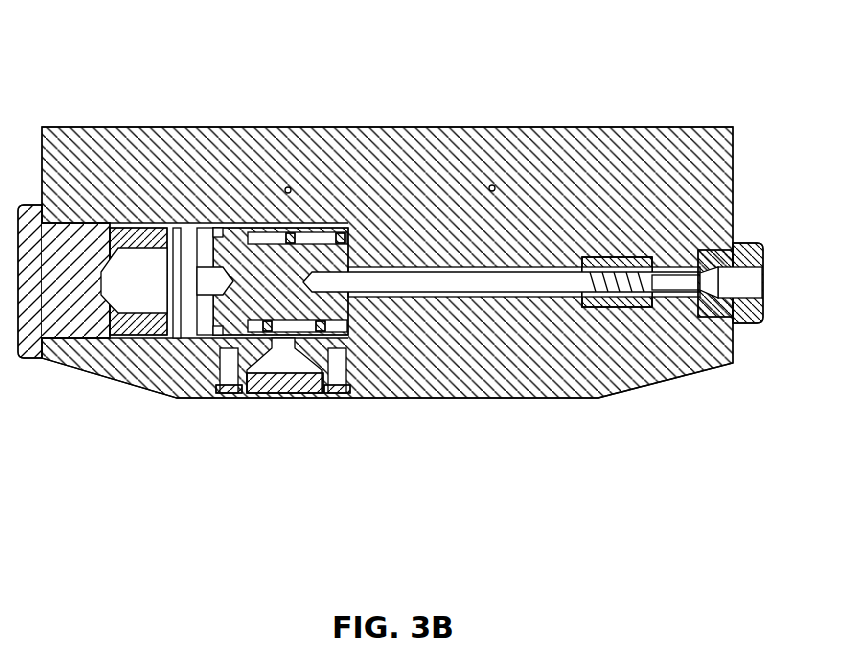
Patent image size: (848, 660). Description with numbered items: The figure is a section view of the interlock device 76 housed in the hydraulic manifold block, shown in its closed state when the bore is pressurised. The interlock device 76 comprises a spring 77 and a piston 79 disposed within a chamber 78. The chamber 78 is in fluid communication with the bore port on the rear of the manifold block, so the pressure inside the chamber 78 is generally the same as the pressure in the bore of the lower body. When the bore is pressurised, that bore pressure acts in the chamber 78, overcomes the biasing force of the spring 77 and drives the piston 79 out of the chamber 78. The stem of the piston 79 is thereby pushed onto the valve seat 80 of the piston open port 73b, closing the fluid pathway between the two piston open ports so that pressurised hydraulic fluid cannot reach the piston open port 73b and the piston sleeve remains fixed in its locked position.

The interlock device 76 is at (674, 60).
The spring 77 is at (337, 228).
The chamber 78 is at (190, 243).
The piston 79 is at (242, 253).
The valve seat 80 is at (618, 257).
The piston open port 73b is at (765, 283).